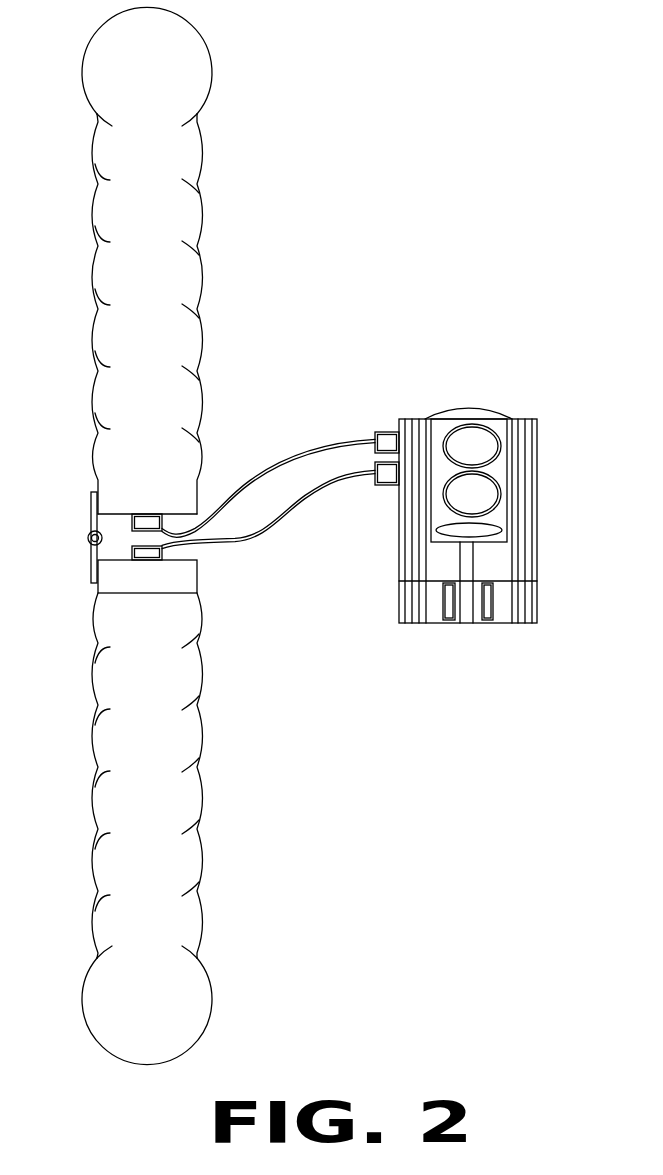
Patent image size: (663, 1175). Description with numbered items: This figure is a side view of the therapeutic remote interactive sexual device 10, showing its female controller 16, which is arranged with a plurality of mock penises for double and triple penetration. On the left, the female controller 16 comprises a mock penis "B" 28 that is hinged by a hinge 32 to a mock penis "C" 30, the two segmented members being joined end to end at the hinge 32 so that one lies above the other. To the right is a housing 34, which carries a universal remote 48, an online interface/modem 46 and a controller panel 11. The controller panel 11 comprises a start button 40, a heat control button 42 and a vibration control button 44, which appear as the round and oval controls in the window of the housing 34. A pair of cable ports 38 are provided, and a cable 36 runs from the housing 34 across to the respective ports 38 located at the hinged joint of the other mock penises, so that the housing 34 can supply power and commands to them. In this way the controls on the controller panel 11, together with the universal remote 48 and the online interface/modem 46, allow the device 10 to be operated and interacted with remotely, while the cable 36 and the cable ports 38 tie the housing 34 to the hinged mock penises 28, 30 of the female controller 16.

The therapeutic remote interactive sexual device 10 is at (480, 116).
The controller panel 11 is at (507, 427).
The female controller 16 is at (528, 468).
The mock penis "B" 28 is at (155, 272).
The mock penis "C" 30 is at (185, 797).
The hinge 32 is at (96, 500).
The housing 34 is at (412, 501).
The cable 36 is at (238, 542).
The cable ports 38 is at (143, 523).
The start button 40 is at (462, 536).
The heat control button 42 is at (447, 438).
The vibration control button 44 is at (478, 495).
The online interface/modem 46 is at (470, 408).
The universal remote 48 is at (528, 592).